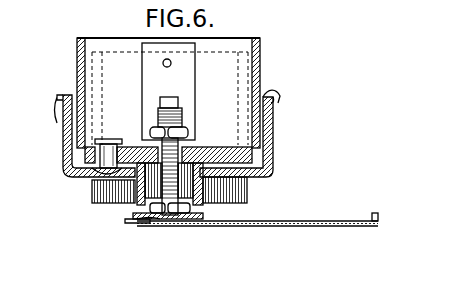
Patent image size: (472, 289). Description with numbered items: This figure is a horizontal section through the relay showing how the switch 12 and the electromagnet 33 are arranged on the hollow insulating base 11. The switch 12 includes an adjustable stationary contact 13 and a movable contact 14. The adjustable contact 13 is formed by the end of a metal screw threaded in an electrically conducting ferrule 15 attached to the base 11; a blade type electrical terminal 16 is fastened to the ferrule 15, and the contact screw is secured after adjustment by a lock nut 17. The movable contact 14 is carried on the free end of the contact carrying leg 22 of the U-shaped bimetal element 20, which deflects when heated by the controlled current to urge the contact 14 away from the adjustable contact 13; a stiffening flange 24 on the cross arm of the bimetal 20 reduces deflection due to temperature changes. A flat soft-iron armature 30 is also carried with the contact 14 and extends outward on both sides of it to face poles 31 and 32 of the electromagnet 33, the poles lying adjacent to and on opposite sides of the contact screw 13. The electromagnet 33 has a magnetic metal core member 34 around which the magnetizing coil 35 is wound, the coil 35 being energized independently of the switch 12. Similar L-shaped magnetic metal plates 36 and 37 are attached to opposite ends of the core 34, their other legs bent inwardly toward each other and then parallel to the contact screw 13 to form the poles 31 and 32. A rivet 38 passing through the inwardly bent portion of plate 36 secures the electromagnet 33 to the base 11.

The insulating base 11 is at (260, 77).
The switch 12 is at (133, 217).
The adjustable stationary contact 13 is at (190, 220).
The movable contact 14 is at (143, 220).
The electrically conducting ferrule 15 is at (200, 140).
The blade type electrical terminal 16 is at (180, 87).
The lock nut 17 is at (190, 126).
The U-shaped bimetal element 20 is at (341, 233).
The contact carrying bimetallic leg 22 is at (230, 227).
The stiffening flange 24 is at (378, 218).
The armature 30 is at (130, 225).
The pole 31 is at (130, 208).
The pole 32 is at (192, 210).
The electromagnet 33 is at (282, 155).
The core member 34 is at (281, 99).
The magnetizing coil 35 is at (250, 189).
The L-shaped magnetic metal plate 36 is at (63, 157).
The L-shaped magnetic metal plate 37 is at (275, 163).
The rivet 38 is at (97, 187).